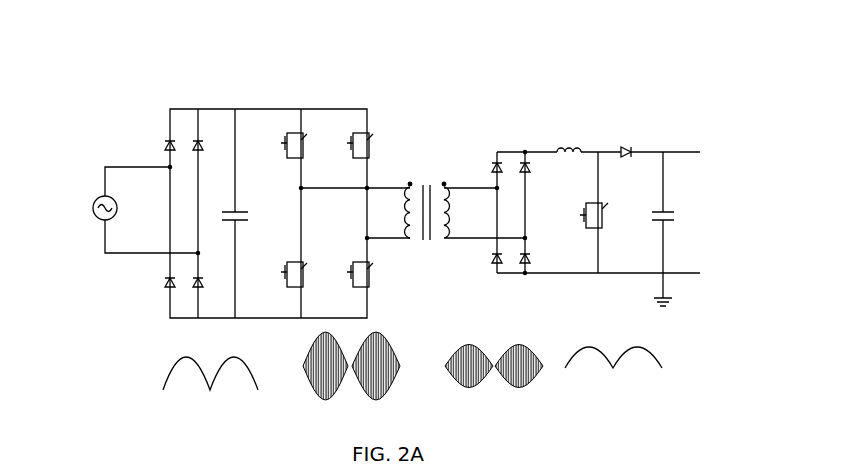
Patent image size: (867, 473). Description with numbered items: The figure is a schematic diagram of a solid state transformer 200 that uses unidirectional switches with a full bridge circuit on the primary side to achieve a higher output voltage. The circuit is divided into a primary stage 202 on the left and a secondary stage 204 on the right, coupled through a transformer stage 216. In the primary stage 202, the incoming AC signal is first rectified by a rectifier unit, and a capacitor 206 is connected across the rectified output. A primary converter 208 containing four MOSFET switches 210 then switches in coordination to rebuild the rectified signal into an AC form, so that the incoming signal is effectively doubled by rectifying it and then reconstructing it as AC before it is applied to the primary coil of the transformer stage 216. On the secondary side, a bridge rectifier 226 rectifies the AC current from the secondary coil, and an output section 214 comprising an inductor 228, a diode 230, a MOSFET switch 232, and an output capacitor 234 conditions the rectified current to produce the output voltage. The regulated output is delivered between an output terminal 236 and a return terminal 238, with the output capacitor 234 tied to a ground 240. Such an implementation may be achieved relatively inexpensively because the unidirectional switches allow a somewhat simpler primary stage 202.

The power converter system 200 is at (133, 133).
The primary stage 202 is at (398, 62).
The secondary stage 204 is at (702, 60).
The capacitor C1 206 is at (240, 212).
The inverter switching bridge 208 is at (375, 101).
The MOSFET switches 210 is at (378, 134).
The output regulation stage 214 is at (713, 99).
The transformer stage 216 is at (93, 208).
The bridge rectifier 226 is at (540, 102).
The inductor 228 is at (580, 150).
The diode 230 is at (640, 147).
The MOSFET switch 232 is at (602, 205).
The output capacitor C2 234 is at (668, 215).
The output terminal 236 is at (698, 151).
The return terminal 238 is at (697, 273).
The ground 240 is at (673, 305).